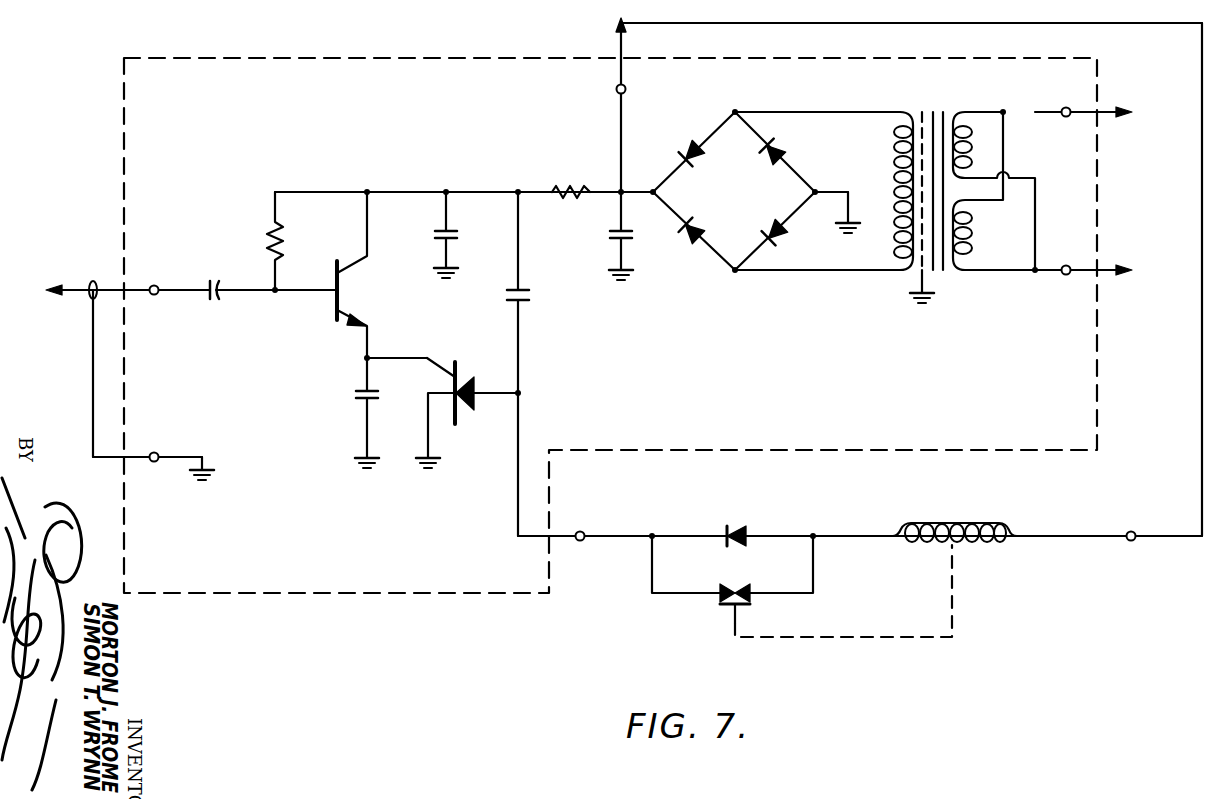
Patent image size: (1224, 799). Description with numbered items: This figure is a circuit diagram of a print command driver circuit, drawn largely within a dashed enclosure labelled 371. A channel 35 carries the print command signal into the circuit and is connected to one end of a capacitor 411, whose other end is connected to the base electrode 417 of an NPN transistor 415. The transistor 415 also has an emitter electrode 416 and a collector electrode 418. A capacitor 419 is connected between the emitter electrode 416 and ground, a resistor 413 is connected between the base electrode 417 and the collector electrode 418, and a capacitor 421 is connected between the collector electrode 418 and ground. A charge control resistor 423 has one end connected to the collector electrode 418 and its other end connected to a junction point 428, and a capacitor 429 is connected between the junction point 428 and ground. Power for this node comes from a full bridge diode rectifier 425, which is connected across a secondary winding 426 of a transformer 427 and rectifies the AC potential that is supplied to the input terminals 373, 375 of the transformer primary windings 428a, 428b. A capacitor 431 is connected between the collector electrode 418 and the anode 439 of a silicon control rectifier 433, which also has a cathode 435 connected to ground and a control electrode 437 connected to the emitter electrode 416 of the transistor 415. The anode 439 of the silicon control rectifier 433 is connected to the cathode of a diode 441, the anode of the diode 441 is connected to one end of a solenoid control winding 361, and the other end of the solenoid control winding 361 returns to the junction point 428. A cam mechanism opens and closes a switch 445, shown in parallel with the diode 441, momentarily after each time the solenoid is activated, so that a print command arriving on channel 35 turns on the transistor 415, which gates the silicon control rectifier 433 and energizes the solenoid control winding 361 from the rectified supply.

The channel 35 is at (53, 291).
The capacitor 411 is at (213, 302).
The resistor 413 is at (268, 238).
The transistor 415 is at (344, 297).
The emitter electrode 416 is at (343, 323).
The base electrode 417 is at (318, 268).
The collector electrode 418 is at (352, 262).
The capacitor 419 is at (356, 391).
The capacitor 421 is at (436, 233).
The charge control resistor 423 is at (556, 186).
The full bridge diode rectifier 425 is at (750, 204).
The secondary winding 426 is at (896, 165).
The transformer 427 is at (936, 106).
The junction point 428 is at (619, 189).
The transformer primary winding 428a is at (972, 150).
The transformer primary winding 428b is at (972, 228).
The capacitor 429 is at (610, 234).
The capacitor 431 is at (530, 297).
The silicon control rectifier 433 is at (452, 385).
The cathode 435 is at (432, 440).
The control electrode 437 is at (432, 360).
The anode 439 is at (518, 390).
The diode 441 is at (732, 524).
The switch 445 is at (752, 604).
The solenoid control winding 361 is at (958, 522).
The power supply circuit 371 is at (775, 370).
The input terminal 373 is at (1108, 113).
The input terminal 375 is at (1108, 271).